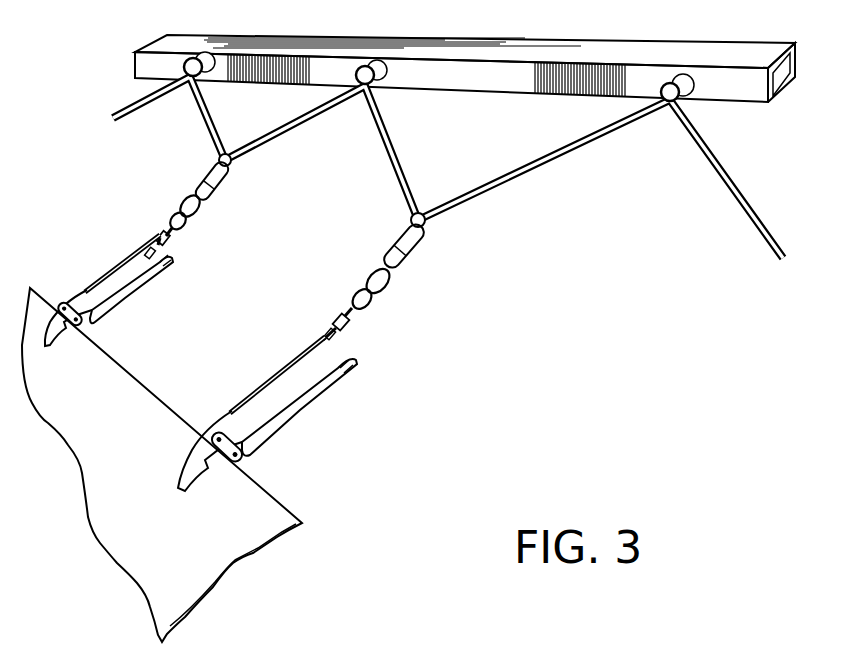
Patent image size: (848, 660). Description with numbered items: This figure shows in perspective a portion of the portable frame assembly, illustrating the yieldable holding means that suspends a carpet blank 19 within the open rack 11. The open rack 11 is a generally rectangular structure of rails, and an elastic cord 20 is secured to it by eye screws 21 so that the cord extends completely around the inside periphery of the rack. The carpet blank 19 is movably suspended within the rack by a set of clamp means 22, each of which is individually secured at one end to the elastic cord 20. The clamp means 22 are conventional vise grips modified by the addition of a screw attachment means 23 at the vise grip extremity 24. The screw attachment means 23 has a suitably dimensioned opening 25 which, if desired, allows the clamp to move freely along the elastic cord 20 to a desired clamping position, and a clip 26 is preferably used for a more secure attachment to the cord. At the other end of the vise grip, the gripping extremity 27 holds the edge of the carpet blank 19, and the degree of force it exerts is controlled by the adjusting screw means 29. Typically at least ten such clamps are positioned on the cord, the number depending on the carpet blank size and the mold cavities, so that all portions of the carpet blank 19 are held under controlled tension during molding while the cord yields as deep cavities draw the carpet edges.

The open rack 11 is at (150, 47).
The elastic cord 20 is at (386, 152).
The eye screws 21 is at (200, 78).
The clip 26 is at (398, 236).
The opening 25 is at (372, 300).
The screw attachment means 23 is at (356, 322).
The vise grip extremity 24 is at (322, 334).
The adjusting screw means 29 is at (338, 345).
The clamp means 22 is at (328, 306).
The gripping extremity 27 is at (228, 420).
The carpet blank 19 is at (174, 539).